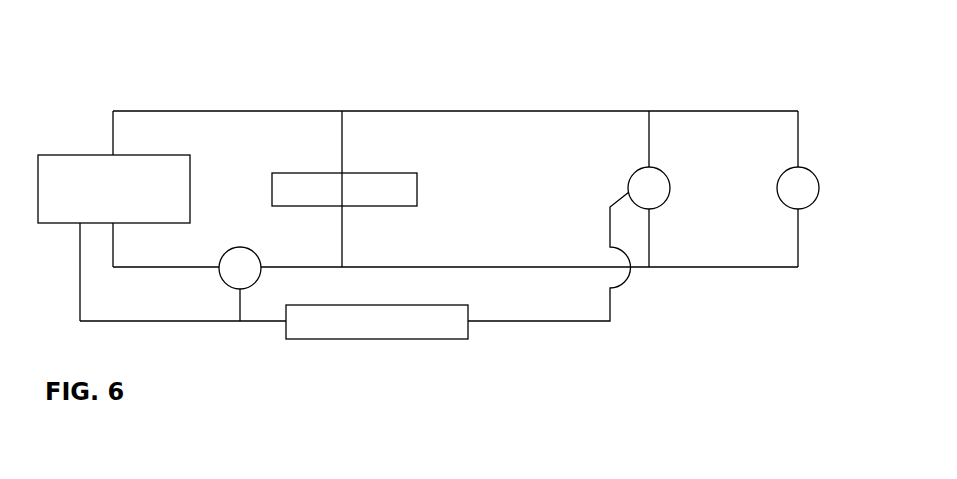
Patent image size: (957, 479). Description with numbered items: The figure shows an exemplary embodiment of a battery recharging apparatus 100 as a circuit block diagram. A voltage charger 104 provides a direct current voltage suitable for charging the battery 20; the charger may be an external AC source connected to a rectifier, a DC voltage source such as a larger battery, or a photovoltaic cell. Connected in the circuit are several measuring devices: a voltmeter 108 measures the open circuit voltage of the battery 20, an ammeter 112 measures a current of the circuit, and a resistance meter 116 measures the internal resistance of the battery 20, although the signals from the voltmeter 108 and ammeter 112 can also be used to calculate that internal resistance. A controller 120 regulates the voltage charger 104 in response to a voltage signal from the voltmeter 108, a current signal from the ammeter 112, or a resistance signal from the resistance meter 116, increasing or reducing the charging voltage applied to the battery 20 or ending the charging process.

The battery recharging apparatus 100 is at (494, 87).
The voltage charger 104 is at (83, 155).
The battery 20 is at (390, 172).
The ammeter 112 is at (257, 252).
The voltmeter 108 is at (635, 172).
The resistance meter 116 is at (778, 185).
The controller 120 is at (470, 315).